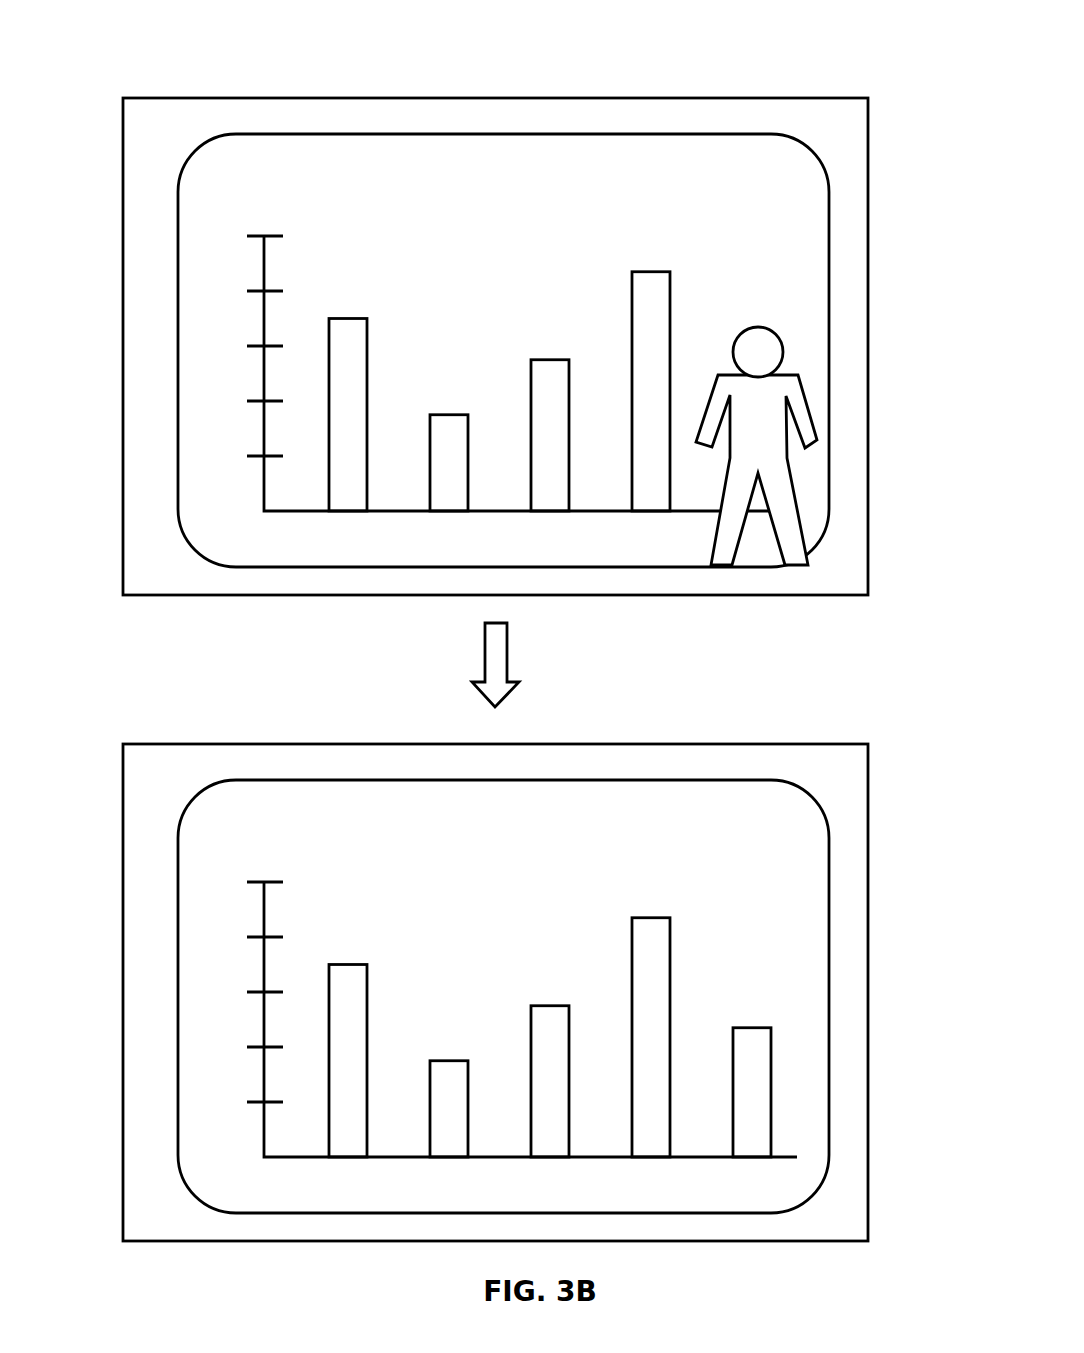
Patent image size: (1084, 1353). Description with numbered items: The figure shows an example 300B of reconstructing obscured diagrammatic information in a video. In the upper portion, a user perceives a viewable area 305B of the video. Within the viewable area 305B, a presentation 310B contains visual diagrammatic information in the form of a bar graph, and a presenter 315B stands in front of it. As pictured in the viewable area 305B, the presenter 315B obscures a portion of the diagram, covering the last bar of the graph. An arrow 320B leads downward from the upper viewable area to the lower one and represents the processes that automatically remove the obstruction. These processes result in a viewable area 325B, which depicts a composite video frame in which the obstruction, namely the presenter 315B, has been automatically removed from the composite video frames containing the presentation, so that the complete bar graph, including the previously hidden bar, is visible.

The example of reconstructing obscured diagrammatic information 300B is at (768, 27).
The viewable area 305B is at (868, 348).
The presentation 310B is at (178, 397).
The presenter 315B is at (73, 1009).
The arrow 320B is at (507, 655).
The viewable area 325B is at (868, 994).